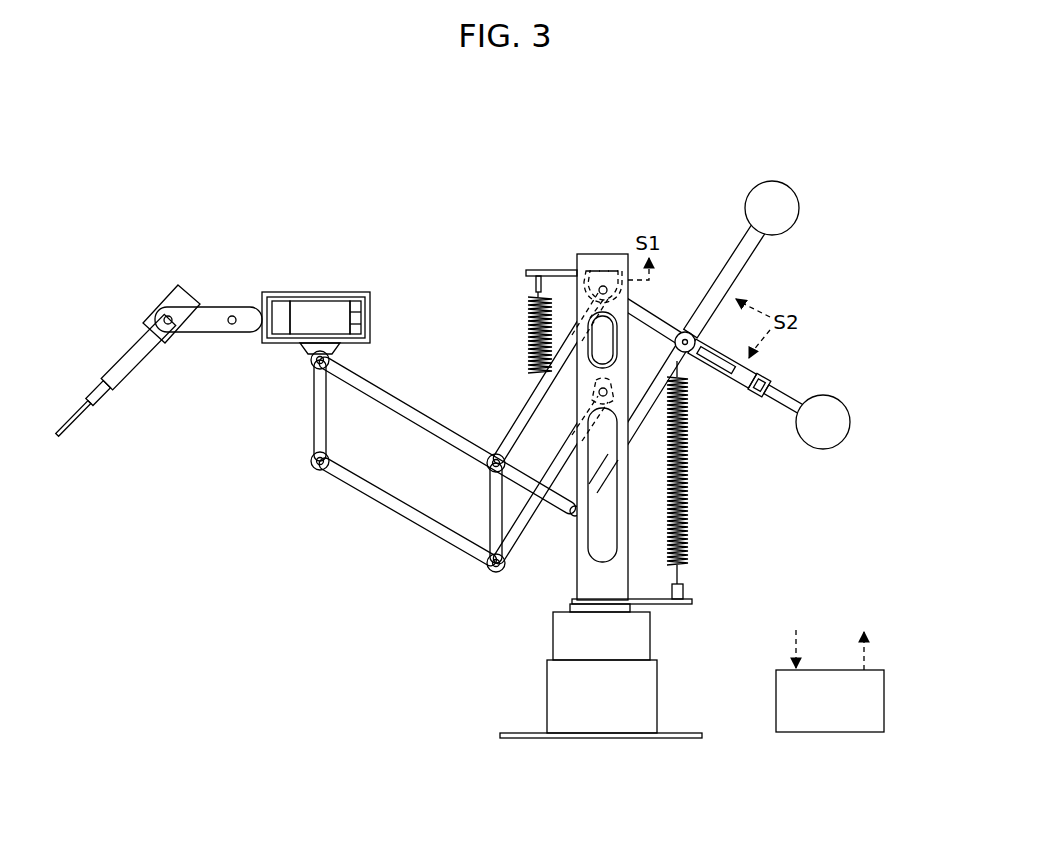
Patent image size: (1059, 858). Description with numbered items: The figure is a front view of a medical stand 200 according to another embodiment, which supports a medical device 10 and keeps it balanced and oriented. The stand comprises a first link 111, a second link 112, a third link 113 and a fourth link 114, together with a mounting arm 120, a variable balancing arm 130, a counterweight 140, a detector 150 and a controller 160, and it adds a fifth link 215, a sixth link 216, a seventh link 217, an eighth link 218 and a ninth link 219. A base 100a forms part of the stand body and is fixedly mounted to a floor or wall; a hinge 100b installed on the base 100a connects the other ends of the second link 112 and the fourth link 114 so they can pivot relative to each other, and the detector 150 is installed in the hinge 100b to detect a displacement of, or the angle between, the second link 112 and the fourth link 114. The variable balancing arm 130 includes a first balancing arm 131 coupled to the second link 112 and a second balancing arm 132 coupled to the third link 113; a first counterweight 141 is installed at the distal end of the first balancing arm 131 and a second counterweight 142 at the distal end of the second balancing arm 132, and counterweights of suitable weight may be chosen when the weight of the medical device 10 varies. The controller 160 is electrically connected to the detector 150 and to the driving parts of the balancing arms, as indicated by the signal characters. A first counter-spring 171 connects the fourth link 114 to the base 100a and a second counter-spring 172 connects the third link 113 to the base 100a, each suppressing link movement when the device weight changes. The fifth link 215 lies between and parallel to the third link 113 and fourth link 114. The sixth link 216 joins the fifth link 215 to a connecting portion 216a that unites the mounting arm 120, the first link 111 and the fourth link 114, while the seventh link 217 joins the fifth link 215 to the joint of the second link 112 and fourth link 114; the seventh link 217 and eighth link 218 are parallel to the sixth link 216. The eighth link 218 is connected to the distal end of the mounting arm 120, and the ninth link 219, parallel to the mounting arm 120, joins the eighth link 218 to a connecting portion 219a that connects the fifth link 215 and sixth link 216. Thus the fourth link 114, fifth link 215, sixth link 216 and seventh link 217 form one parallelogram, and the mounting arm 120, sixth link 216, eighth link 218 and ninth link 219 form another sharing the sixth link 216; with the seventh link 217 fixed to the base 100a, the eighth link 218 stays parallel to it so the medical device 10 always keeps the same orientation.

The medical device 10 is at (116, 346).
The base 100a is at (603, 587).
The hinge 100b is at (578, 268).
The first link 111 is at (558, 506).
The second link 112 is at (668, 300).
The third link 113 is at (688, 405).
The fourth link 114 is at (530, 393).
The mounting arm 120 is at (387, 392).
The variable balancing arm 130 is at (789, 316).
The first balancing arm 131 is at (768, 379).
The second balancing arm 132 is at (764, 256).
The counterweight 140 is at (827, 315).
The first counterweight 141 is at (860, 417).
The second counterweight 142 is at (787, 208).
The detector 150 is at (603, 270).
The controller 160 is at (829, 733).
The first counter-spring 171 is at (528, 318).
The second counter-spring 172 is at (690, 534).
The medical stand 200 is at (565, 162).
The fifth link 215 is at (556, 466).
The sixth link 216 is at (490, 512).
The connecting portion 216a is at (480, 470).
The seventh link 217 is at (603, 343).
The eighth link 218 is at (318, 410).
The ninth link 219 is at (362, 487).
The connecting portion 219a is at (480, 572).